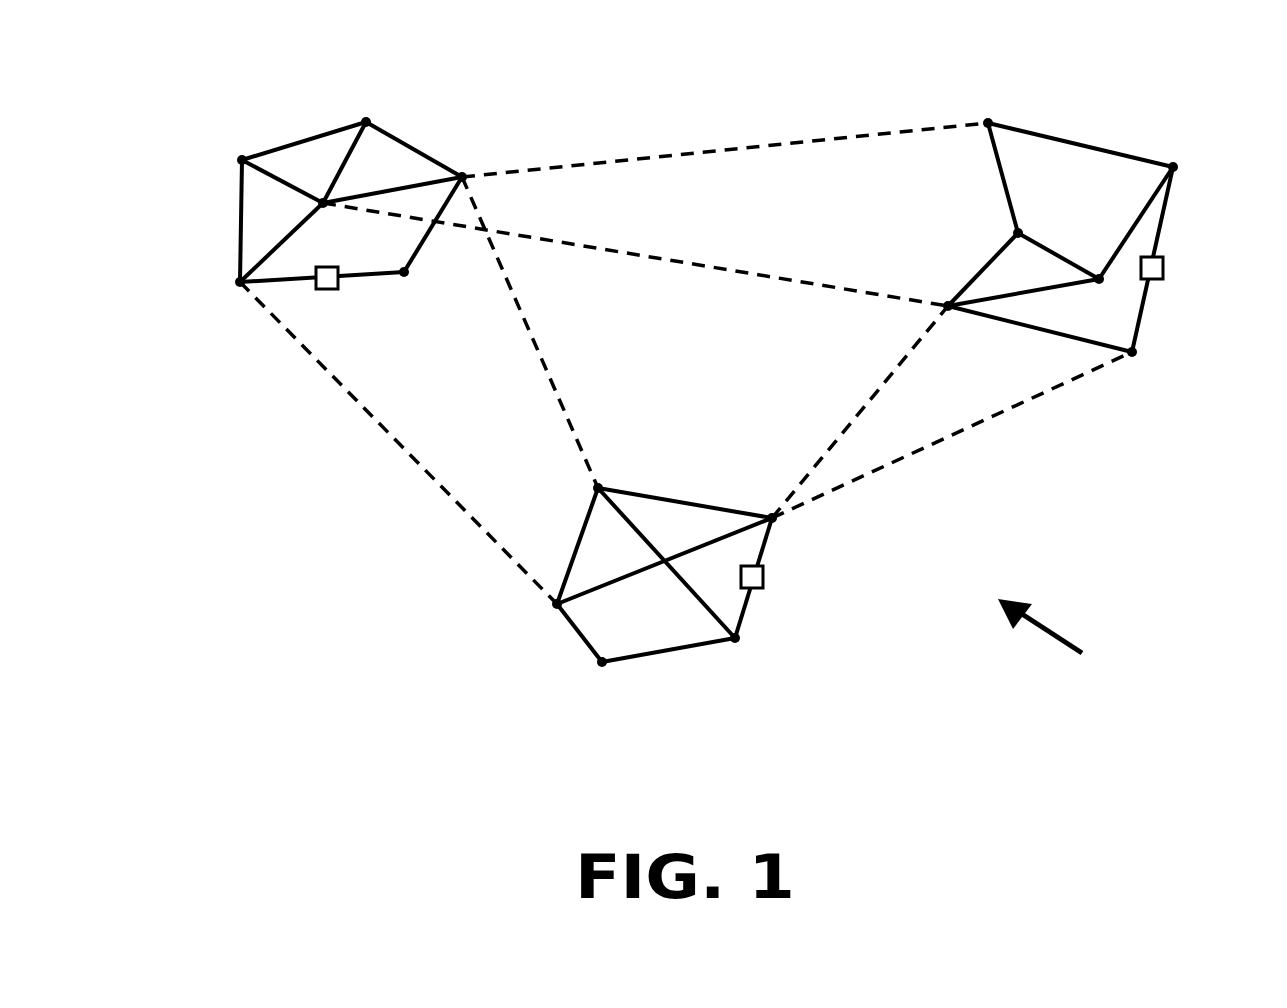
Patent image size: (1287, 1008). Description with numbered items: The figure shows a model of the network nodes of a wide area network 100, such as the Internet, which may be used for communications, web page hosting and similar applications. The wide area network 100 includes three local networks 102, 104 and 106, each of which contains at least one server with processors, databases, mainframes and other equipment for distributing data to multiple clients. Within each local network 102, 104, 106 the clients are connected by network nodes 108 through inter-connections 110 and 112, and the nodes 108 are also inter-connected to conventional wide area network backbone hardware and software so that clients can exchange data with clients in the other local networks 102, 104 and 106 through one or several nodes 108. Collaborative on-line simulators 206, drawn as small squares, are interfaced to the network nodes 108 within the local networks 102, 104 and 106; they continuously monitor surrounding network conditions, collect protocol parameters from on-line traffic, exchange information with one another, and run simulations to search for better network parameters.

The wide area network 100 is at (1143, 690).
The local network 102 is at (1060, 203).
The local network 104 is at (664, 617).
The local network 106 is at (294, 202).
The network node 108 is at (1195, 374).
The inter-connection 110 is at (414, 123).
The inter-connection 112 is at (725, 126).
The collaborative on-line simulator 206 is at (791, 437).